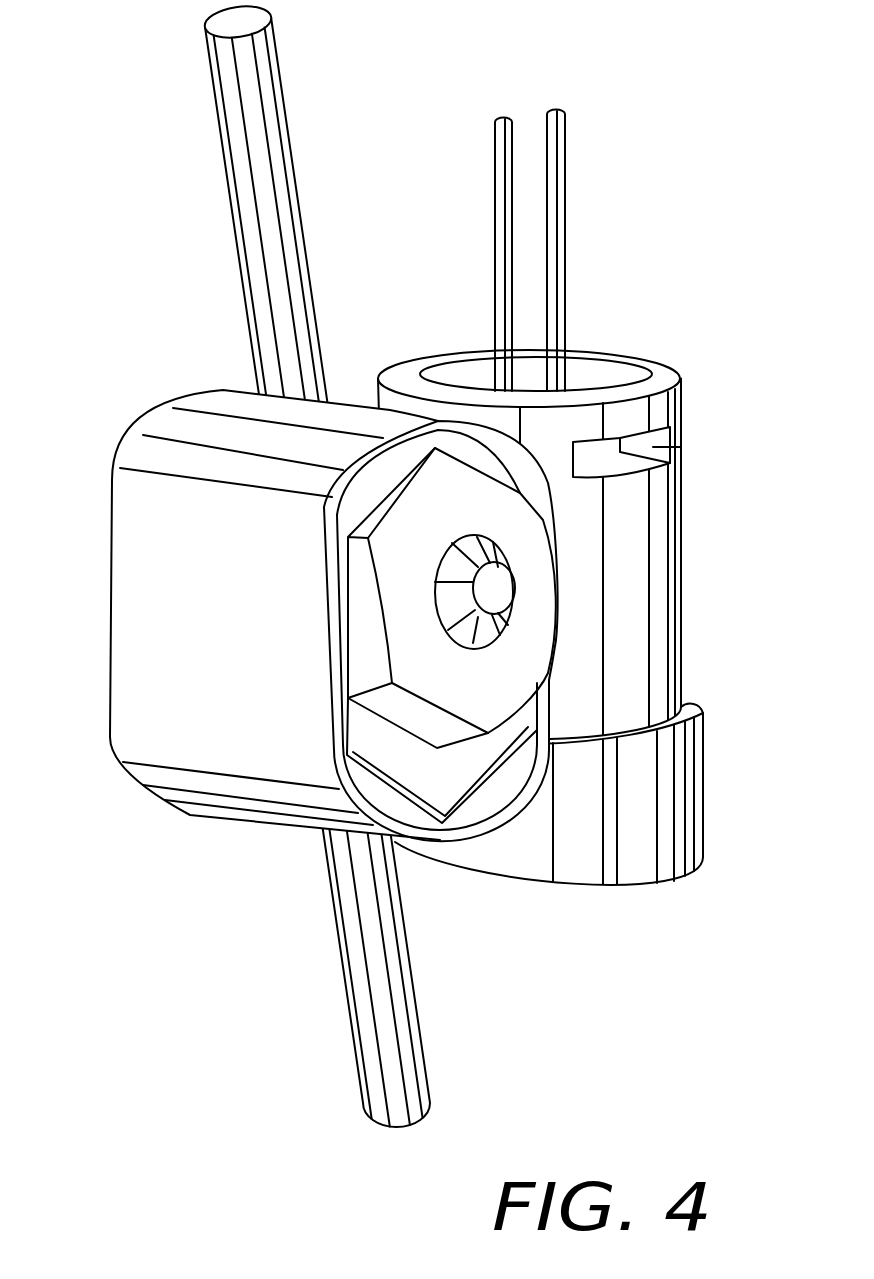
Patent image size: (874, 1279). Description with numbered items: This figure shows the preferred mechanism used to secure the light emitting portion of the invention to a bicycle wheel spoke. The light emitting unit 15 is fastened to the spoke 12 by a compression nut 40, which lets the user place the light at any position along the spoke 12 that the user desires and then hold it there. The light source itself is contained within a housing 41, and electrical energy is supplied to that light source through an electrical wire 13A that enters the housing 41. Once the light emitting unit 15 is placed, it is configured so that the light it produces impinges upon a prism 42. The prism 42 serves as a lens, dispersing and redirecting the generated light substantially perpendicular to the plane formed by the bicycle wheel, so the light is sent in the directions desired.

The spoke 12 is at (253, 122).
The electrical wire 13A is at (553, 243).
The light emitting unit 15 is at (183, 420).
The compression nut 40 is at (458, 687).
The housing 41 is at (633, 653).
The prism 42 is at (712, 825).